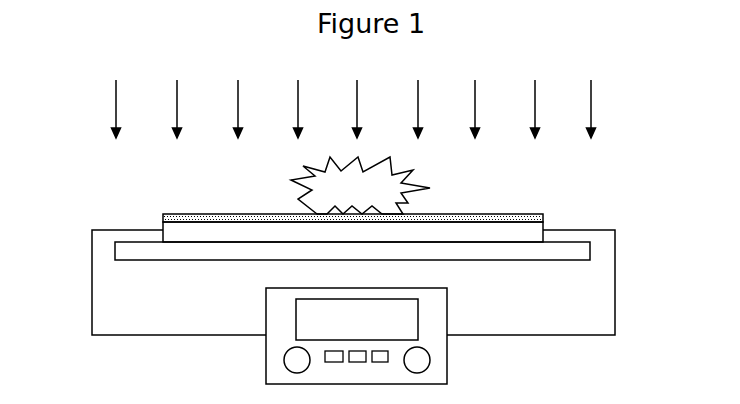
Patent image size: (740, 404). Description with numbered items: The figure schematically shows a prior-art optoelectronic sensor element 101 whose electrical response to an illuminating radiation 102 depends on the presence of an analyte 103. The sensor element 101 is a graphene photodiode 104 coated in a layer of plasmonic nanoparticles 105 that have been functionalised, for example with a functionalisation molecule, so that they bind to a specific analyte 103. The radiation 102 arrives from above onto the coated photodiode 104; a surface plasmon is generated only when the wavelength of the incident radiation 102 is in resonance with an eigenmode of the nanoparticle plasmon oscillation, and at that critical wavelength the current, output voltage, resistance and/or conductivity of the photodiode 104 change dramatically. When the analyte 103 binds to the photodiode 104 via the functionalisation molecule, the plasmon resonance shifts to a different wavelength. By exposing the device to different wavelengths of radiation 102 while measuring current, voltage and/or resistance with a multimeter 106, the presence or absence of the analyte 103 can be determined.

The optoelectronic sensor element 101 is at (619, 188).
The illuminating radiation 102 is at (115, 105).
The analyte 103 is at (360, 185).
The graphene photodiode 104 is at (208, 233).
The layer of plasmonic nanoparticles 105 is at (466, 215).
The multimeter 106 is at (356, 336).